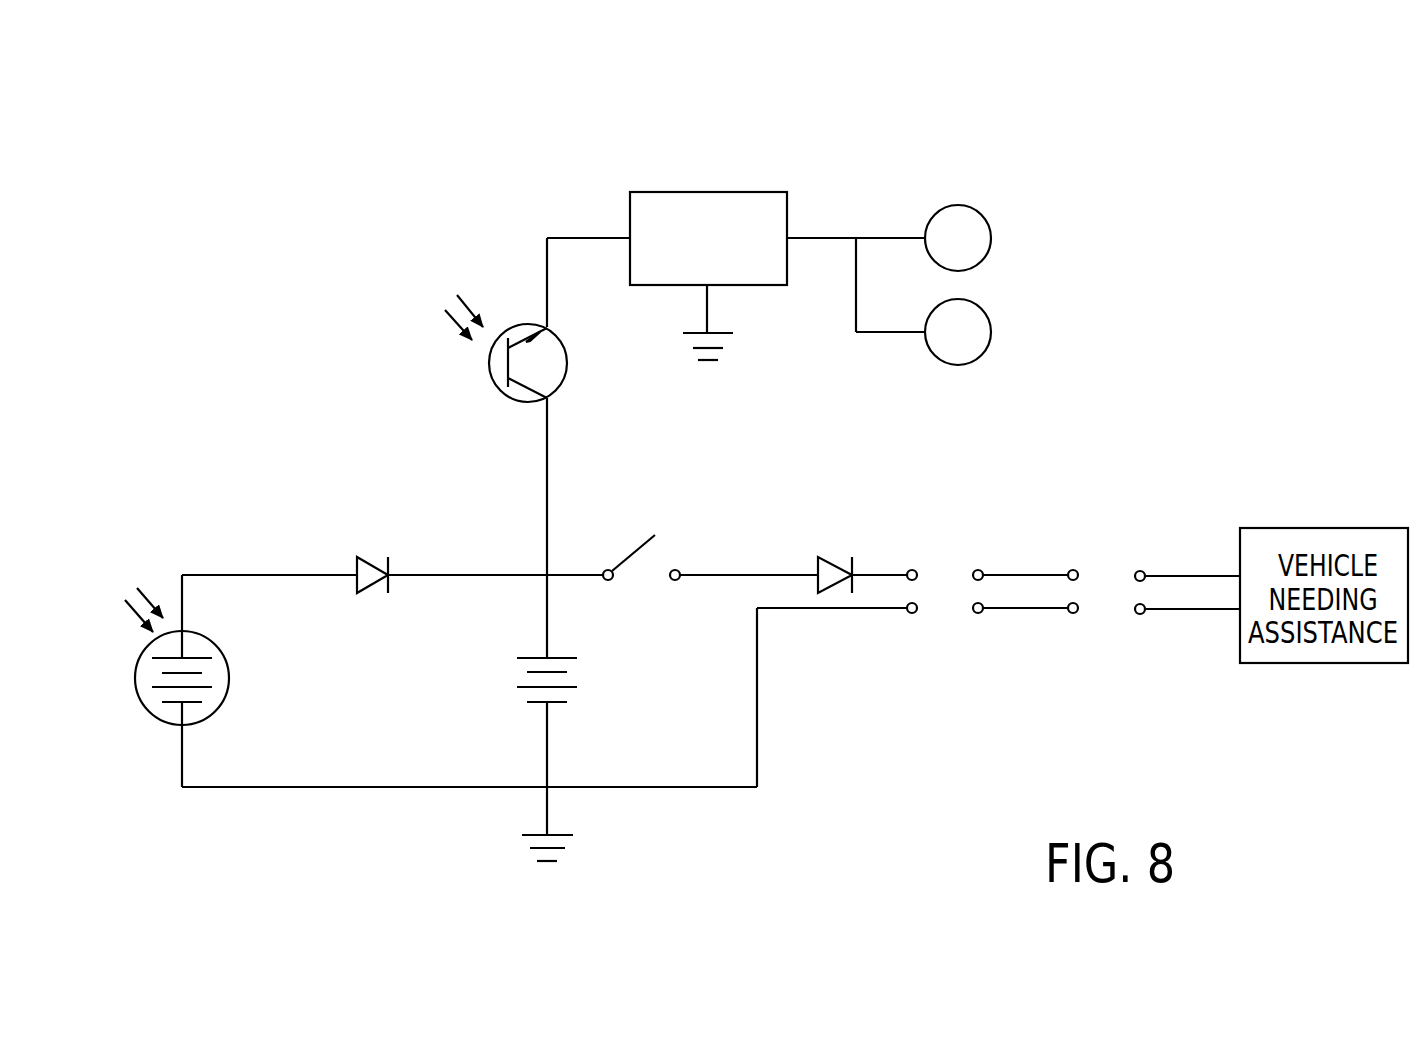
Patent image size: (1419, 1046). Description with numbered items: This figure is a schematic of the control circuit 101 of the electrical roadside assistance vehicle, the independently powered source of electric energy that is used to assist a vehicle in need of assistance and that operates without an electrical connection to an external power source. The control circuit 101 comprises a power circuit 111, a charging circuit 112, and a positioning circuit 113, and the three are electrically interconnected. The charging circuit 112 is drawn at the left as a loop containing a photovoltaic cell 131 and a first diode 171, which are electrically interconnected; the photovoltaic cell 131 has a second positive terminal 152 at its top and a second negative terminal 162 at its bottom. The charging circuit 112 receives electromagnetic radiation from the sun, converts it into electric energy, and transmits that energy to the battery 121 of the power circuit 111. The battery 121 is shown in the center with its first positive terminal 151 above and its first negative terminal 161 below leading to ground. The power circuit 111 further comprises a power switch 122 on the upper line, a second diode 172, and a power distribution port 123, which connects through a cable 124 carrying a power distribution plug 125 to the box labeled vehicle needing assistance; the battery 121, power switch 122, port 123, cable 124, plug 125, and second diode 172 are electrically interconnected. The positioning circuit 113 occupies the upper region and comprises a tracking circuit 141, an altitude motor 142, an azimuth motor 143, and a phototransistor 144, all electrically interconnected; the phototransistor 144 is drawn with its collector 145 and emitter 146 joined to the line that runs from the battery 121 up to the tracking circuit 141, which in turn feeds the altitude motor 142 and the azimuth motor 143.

The control circuit 101 is at (1282, 230).
The power circuit 111 is at (823, 662).
The charging circuit 112 is at (357, 788).
The positioning circuit 113 is at (1077, 278).
The battery 121 is at (583, 678).
The power switch 122 is at (630, 550).
The power distribution port 123 is at (913, 565).
The cable 124 is at (1025, 573).
The power distribution plug 125 is at (970, 565).
The photovoltaic cell 131 is at (229, 668).
The tracking circuit 141 is at (707, 192).
The altitude motor 142 is at (992, 238).
The azimuth motor 143 is at (992, 332).
The phototransistor 144 is at (567, 363).
The collector 145 is at (550, 407).
The emitter 146 is at (547, 325).
The first positive terminal 151 is at (548, 635).
The second positive terminal 152 is at (182, 618).
The first negative terminal 161 is at (550, 717).
The second negative terminal 162 is at (182, 735).
The first diode 171 is at (378, 555).
The second diode 172 is at (826, 548).